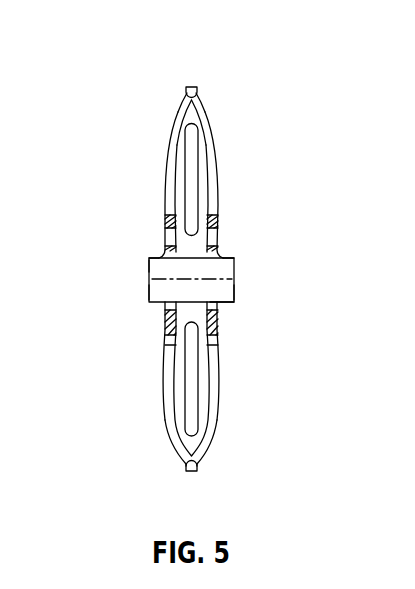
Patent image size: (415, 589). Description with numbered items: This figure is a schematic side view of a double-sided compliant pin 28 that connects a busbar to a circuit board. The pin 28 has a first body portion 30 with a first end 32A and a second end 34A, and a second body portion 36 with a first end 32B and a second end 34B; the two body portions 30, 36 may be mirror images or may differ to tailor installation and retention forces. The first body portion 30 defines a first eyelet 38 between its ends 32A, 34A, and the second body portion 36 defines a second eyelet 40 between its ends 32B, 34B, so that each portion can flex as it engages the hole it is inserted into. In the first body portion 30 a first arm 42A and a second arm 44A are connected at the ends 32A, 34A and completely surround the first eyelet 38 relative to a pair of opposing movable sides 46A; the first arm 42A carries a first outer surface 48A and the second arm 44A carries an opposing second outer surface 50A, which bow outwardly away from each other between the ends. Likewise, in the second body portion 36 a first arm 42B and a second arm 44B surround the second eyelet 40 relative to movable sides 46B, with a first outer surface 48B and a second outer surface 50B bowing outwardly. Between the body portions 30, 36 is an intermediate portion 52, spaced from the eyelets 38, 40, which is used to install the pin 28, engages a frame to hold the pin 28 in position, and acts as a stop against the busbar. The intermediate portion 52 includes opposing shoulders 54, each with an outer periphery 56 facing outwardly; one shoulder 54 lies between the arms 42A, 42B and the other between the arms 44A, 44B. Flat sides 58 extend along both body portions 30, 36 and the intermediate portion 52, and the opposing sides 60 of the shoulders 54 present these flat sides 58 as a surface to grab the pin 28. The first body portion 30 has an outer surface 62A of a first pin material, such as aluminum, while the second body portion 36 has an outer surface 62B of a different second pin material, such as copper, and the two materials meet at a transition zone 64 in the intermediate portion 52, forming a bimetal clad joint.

The pin 28 is at (314, 49).
The first body portion 30 is at (104, 385).
The second body portion 36 is at (142, 118).
The first end of first body portion 32A is at (188, 470).
The first end of second body portion 32B is at (197, 90).
The second end of first body portion 34A is at (214, 345).
The second end of second body portion 34B is at (214, 234).
The first eyelet 38 is at (207, 415).
The second eyelet 40 is at (212, 150).
The first arm of first body portion 42A is at (166, 378).
The first arm of second body portion 42B is at (178, 112).
The second arm of first body portion 44A is at (213, 380).
The second arm of second body portion 44B is at (206, 122).
The movable sides of first body portion 46A is at (163, 392).
The movable sides of second body portion 46B is at (176, 162).
The first outer surface of first body portion 48A is at (166, 426).
The first outer surface of second body portion 48B is at (163, 148).
The second outer surface of first body portion 50A is at (213, 440).
The second outer surface of second body portion 50B is at (224, 183).
The intermediate portion 52 is at (170, 301).
The shoulder 54 is at (155, 258).
The outer periphery 56 is at (149, 292).
The flat sides 58 is at (216, 304).
The opposing sides of shoulders 60 is at (149, 265).
The outer surface of first body portion 62A is at (205, 463).
The outer surface of second body portion 62B is at (186, 87).
The transition zone 64 is at (238, 259).